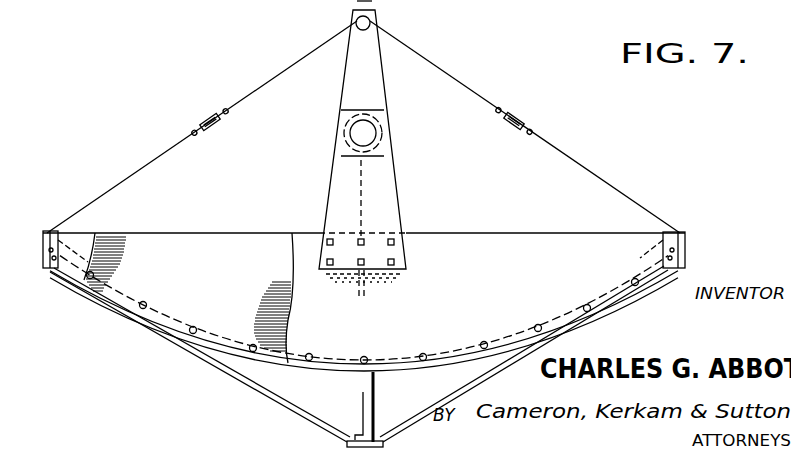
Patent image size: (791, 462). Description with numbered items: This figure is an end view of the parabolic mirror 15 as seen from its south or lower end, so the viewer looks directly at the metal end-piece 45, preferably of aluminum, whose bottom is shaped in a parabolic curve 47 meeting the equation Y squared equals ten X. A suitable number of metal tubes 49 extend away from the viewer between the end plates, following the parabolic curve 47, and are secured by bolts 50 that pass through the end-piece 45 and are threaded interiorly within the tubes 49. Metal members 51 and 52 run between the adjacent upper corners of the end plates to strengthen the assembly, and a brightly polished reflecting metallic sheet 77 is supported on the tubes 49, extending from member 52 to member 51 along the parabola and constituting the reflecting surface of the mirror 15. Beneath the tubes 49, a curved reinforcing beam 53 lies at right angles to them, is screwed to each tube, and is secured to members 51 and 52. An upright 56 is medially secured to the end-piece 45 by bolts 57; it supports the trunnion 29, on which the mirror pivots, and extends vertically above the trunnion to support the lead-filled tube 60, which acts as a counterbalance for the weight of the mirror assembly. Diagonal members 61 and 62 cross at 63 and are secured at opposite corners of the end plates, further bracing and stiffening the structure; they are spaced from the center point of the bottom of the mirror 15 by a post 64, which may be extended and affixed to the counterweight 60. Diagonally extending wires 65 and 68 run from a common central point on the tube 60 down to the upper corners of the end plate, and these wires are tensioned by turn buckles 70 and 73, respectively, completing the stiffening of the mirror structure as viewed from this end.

The mirror 15 is at (428, 329).
The trunnion 29 is at (371, 133).
The metal end-piece 45 is at (501, 245).
The parabolic curve 47 is at (434, 364).
The metal tubes 49 is at (190, 333).
The bolts 50 is at (362, 356).
The metal member 51 is at (686, 246).
The metal member 52 is at (44, 234).
The curved reinforcing beam 53 is at (389, 375).
The upright 56 is at (376, 85).
The bolts 57 is at (366, 239).
The lead-filled tube 60 is at (370, 22).
The diagonal member 61 is at (472, 389).
The diagonal member 62 is at (276, 397).
The crossing point 63 is at (384, 446).
The post 64 is at (363, 392).
The wire 65 is at (258, 89).
The wire 68 is at (476, 92).
The turn buckle 70 is at (204, 121).
The turn buckle 73 is at (522, 117).
The reflecting metallic sheet 77 is at (177, 318).